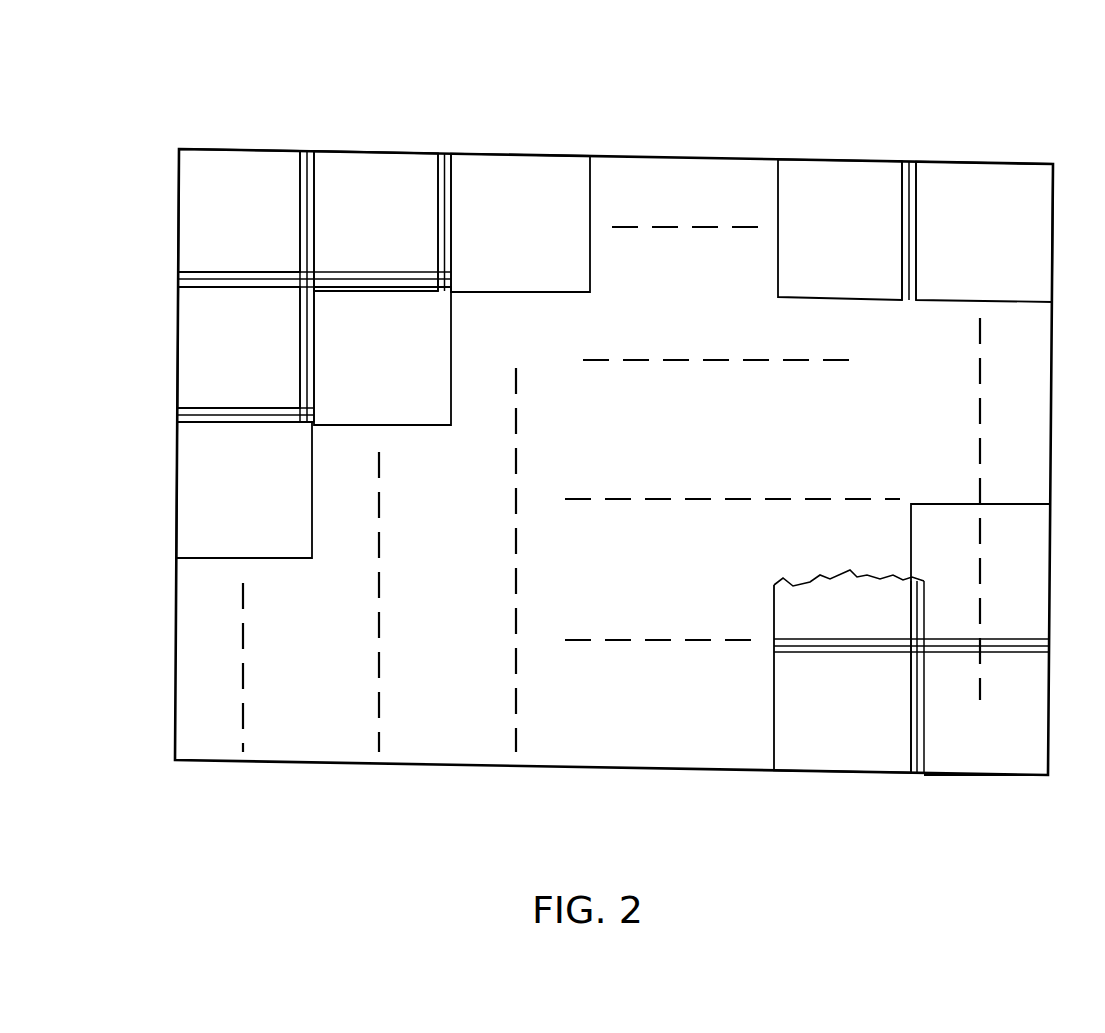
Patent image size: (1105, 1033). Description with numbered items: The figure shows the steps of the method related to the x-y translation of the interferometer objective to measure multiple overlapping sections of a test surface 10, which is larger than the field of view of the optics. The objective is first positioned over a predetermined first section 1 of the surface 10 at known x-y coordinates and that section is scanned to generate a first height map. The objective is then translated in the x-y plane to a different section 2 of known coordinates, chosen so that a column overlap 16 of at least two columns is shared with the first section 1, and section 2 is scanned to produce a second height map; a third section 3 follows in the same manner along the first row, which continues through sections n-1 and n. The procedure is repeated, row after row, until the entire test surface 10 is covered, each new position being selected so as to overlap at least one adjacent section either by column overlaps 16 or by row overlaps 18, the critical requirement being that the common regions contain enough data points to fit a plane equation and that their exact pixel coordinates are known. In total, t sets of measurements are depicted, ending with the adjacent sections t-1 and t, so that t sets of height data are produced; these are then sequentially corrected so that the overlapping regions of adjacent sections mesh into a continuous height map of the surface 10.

The test surface 10 is at (1016, 159).
The first section 1 is at (237, 160).
The second section 2 is at (360, 170).
The third section 3 is at (512, 183).
The section n-1 is at (818, 188).
The section n is at (1030, 228).
The section t-1 is at (790, 715).
The section t is at (1015, 722).
The column overlap region 16 is at (313, 173).
The row overlap region 18 is at (244, 284).